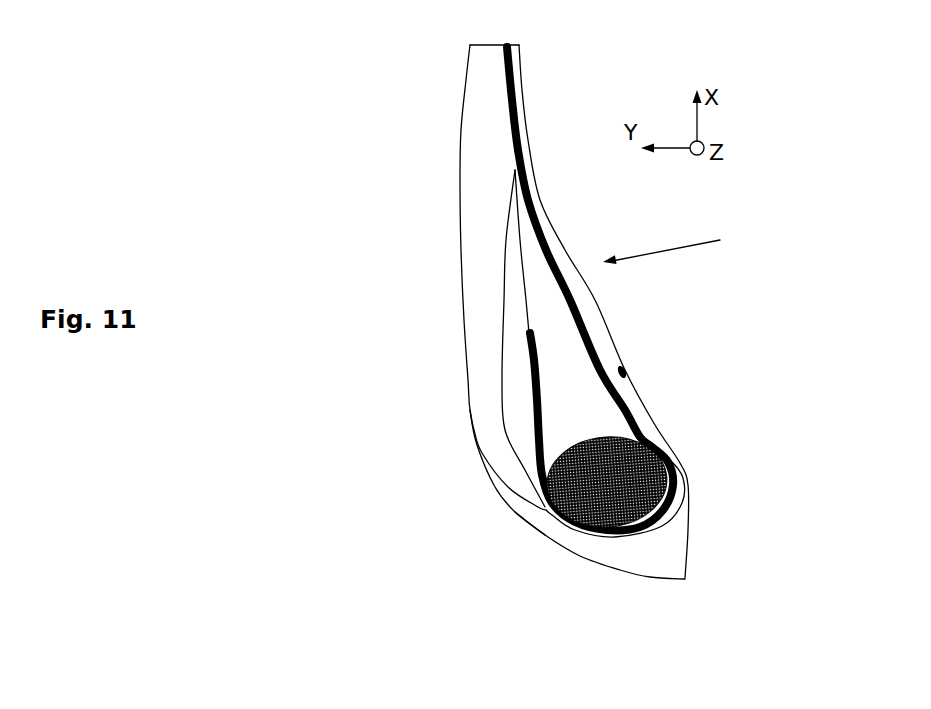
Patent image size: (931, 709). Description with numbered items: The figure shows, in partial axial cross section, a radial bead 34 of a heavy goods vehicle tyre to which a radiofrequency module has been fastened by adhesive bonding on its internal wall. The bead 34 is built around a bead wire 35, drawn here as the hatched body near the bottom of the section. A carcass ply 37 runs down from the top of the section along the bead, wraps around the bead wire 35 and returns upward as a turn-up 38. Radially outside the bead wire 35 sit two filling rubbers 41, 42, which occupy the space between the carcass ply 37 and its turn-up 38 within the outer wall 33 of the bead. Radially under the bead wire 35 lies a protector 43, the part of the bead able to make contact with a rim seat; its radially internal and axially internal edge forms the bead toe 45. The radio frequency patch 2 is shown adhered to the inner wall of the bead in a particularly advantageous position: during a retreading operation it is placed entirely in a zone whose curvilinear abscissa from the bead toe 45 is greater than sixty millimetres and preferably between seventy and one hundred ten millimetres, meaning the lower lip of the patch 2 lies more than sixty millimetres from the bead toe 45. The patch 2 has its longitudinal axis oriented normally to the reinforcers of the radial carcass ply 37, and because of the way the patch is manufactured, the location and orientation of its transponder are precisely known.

The radiofrequency patch 2 is at (626, 372).
The outer wall 33 is at (480, 184).
The radial bead 34 is at (679, 247).
The bead wire 35 is at (605, 479).
The carcass ply 37 is at (587, 328).
The turn-up 38 is at (530, 373).
The filling rubber 41 is at (538, 302).
The filling rubber 42 is at (517, 320).
The protector 43 is at (668, 545).
The bead toe 45 is at (685, 579).